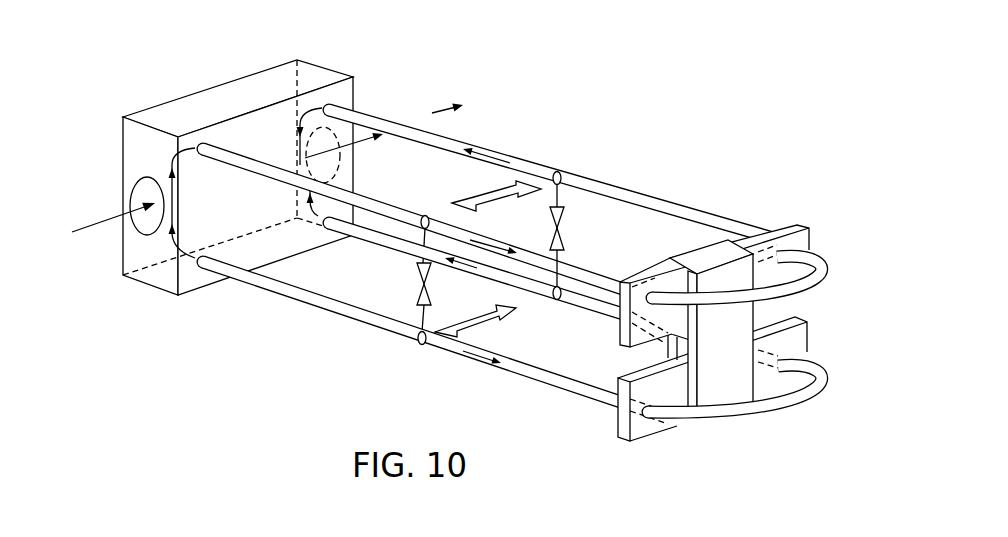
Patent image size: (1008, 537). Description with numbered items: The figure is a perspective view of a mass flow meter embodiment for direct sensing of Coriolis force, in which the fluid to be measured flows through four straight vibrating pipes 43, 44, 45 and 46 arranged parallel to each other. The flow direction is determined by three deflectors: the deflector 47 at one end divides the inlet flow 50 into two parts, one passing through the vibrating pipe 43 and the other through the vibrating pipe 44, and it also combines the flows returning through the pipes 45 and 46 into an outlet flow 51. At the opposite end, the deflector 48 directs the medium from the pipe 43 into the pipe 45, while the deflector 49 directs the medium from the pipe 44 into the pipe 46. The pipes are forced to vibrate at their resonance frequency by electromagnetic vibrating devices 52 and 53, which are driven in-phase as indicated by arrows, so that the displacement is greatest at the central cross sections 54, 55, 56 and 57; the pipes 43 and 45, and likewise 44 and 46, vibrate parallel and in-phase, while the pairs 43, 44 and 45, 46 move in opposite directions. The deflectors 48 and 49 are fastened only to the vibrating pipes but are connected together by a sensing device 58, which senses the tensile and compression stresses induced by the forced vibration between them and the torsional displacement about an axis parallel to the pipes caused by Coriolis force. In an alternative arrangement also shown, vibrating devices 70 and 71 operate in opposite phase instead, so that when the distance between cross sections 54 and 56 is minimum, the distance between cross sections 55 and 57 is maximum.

The vibrating pipe 43 is at (258, 178).
The vibrating pipe 44 is at (265, 293).
The vibrating pipe 45 is at (379, 116).
The vibrating pipe 46 is at (373, 245).
The deflector 47 is at (240, 90).
The deflector 48 is at (800, 237).
The deflector 49 is at (803, 338).
The inlet flow 50 is at (83, 232).
The outlet flow 51 is at (432, 113).
The electromagnetic vibrating device 52 is at (420, 292).
The electromagnetic vibrating device 53 is at (562, 226).
The central cross section 54 is at (425, 216).
The central cross section 55 is at (422, 345).
The central cross section 56 is at (557, 172).
The central cross section 57 is at (557, 300).
The sensing device 58 is at (727, 398).
The vibrating device 70 is at (500, 193).
The vibrating device 71 is at (495, 315).